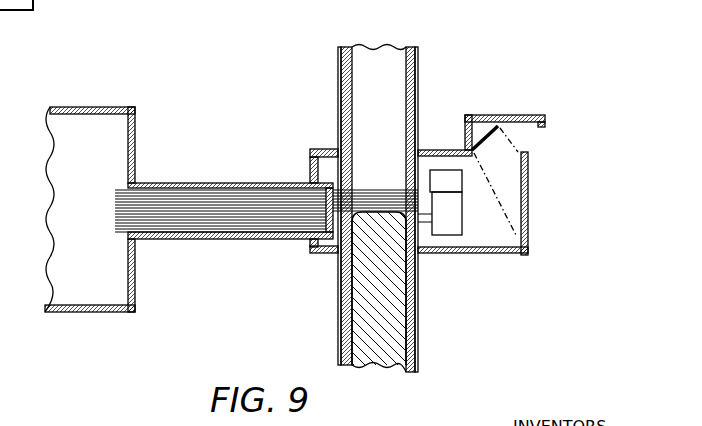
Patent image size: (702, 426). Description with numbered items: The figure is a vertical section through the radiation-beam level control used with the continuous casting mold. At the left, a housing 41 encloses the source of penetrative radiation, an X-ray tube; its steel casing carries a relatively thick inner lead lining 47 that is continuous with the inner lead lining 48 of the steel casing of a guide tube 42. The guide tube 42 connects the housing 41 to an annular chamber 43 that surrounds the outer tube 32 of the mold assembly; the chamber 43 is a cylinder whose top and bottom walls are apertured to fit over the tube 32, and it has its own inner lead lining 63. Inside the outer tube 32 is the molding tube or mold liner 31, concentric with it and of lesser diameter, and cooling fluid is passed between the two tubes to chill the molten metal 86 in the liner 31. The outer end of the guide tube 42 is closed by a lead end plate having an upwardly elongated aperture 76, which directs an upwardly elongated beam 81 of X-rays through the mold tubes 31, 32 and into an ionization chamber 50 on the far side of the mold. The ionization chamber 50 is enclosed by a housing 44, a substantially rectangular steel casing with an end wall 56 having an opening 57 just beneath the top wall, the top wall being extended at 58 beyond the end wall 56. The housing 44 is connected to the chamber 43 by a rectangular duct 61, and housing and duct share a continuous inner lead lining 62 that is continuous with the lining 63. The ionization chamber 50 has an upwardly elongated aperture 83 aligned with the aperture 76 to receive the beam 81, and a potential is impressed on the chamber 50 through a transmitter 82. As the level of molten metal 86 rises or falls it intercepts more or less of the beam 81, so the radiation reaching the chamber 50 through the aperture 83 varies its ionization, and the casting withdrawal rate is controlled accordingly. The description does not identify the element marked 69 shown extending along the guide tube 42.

The molding tube or mold liner 31 is at (403, 58).
The outer tube 32 is at (418, 63).
The housing 41 is at (93, 279).
The guide tube 42 is at (230, 218).
The annular chamber 43 is at (322, 253).
The housing 44 is at (506, 190).
The inner lead lining 47 is at (122, 265).
The inner lead lining 48 is at (230, 233).
The ionization chamber 50 is at (455, 214).
The end wall 56 is at (528, 200).
The opening 57 is at (522, 137).
The top wall extension 58 is at (540, 127).
The rectangular duct 61 is at (425, 150).
The inner lead lining 62 is at (454, 244).
The inner lead lining 63 is at (322, 155).
The optical fiber bundle 69 is at (173, 203).
The aperture 76 is at (330, 192).
The beam of X-rays 81 is at (368, 200).
The transmitter 82 is at (445, 180).
The aperture 83 is at (426, 223).
The molten metal 86 is at (385, 355).